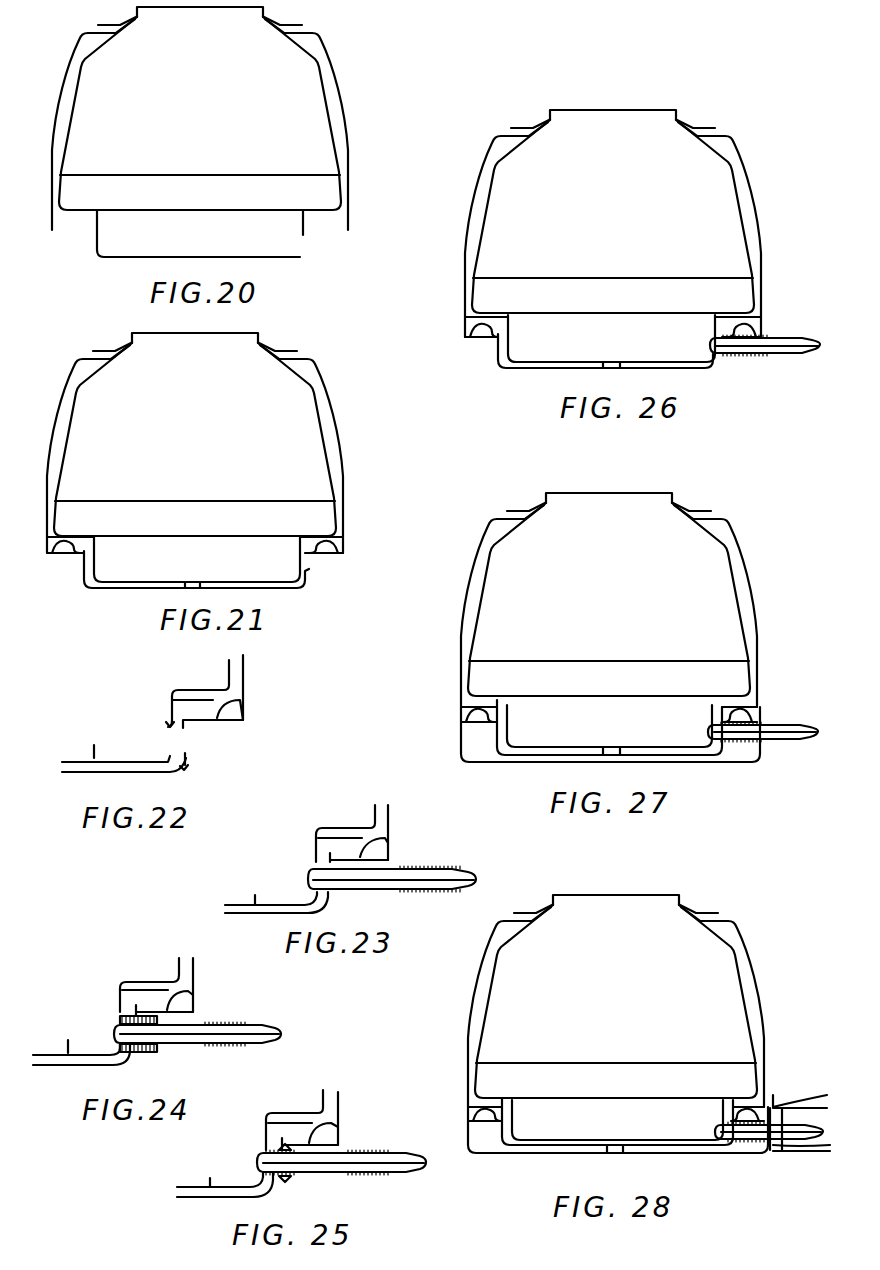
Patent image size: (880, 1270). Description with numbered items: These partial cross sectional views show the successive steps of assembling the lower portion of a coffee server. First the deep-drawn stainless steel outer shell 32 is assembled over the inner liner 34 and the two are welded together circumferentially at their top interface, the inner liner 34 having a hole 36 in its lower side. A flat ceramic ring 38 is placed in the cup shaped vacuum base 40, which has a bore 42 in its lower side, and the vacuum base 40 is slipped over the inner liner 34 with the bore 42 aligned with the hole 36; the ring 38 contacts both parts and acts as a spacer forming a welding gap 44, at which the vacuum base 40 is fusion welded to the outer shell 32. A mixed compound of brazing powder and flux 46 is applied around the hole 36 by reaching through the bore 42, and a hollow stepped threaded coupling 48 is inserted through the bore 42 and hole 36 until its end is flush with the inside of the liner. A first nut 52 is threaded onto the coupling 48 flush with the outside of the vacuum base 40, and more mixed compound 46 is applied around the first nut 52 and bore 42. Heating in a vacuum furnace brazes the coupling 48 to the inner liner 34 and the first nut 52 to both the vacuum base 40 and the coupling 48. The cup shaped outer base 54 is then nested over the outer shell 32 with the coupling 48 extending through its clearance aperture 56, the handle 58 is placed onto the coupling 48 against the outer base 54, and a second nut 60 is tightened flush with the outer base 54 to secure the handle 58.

In FIG. 20, the outer shell 32 is at (210, 103).
In FIG. 21, the outer shell 32 is at (221, 448).
In FIG. 22, the outer shell 32 is at (245, 673).
In FIG. 23, the outer shell 32 is at (390, 810).
In FIG. 24, the outer shell 32 is at (193, 967).
In FIG. 25, the outer shell 32 is at (339, 1100).
In FIG. 26, the outer shell 32 is at (628, 208).
In FIG. 27, the outer shell 32 is at (634, 601).
In FIG. 28, the outer shell 32 is at (624, 987).
In FIG. 20, the inner liner 34 is at (176, 108).
In FIG. 21, the inner liner 34 is at (178, 432).
In FIG. 22, the inner liner 34 is at (94, 745).
In FIG. 23, the inner liner 34 is at (255, 895).
In FIG. 24, the inner liner 34 is at (68, 1040).
In FIG. 25, the inner liner 34 is at (210, 1178).
In FIG. 26, the inner liner 34 is at (607, 184).
In FIG. 27, the inner liner 34 is at (565, 594).
In FIG. 28, the inner liner 34 is at (645, 996).
In FIG. 20, the hole 36 is at (166, 236).
In FIG. 21, the ceramic ring 38 is at (132, 616).
In FIG. 26, the ceramic ring 38 is at (550, 394).
In FIG. 27, the ceramic ring 38 is at (657, 775).
In FIG. 28, the ceramic ring 38 is at (553, 1180).
In FIG. 21, the vacuum base 40 is at (207, 592).
In FIG. 22, the vacuum base 40 is at (82, 773).
In FIG. 23, the vacuum base 40 is at (238, 915).
In FIG. 24, the vacuum base 40 is at (83, 1067).
In FIG. 25, the vacuum base 40 is at (192, 1197).
In FIG. 26, the vacuum base 40 is at (615, 374).
In FIG. 27, the vacuum base 40 is at (609, 727).
In FIG. 28, the vacuum base 40 is at (618, 1156).
In FIG. 21, the bore 42 is at (227, 582).
In FIG. 21, the welding gap 44 is at (231, 536).
In FIG. 22, the welding gap 44 is at (237, 725).
In FIG. 22, the mixed compound of brazing powder and flux 46 is at (168, 724).
In FIG. 25, the mixed compound of brazing powder and flux 46 is at (285, 1145).
In FIG. 23, the threaded coupling 48 is at (480, 880).
In FIG. 24, the threaded coupling 48 is at (285, 1028).
In FIG. 25, the threaded coupling 48 is at (405, 1172).
In FIG. 26, the threaded coupling 48 is at (769, 306).
In FIG. 27, the threaded coupling 48 is at (764, 689).
In FIG. 28, the threaded coupling 48 is at (769, 1132).
In FIG. 24, the first nut 52 is at (133, 983).
In FIG. 27, the outer base 54 is at (566, 739).
In FIG. 27, the clearance aperture 56 is at (766, 756).
In FIG. 28, the handle 58 is at (802, 1063).
In FIG. 28, the second nut 60 is at (800, 1159).